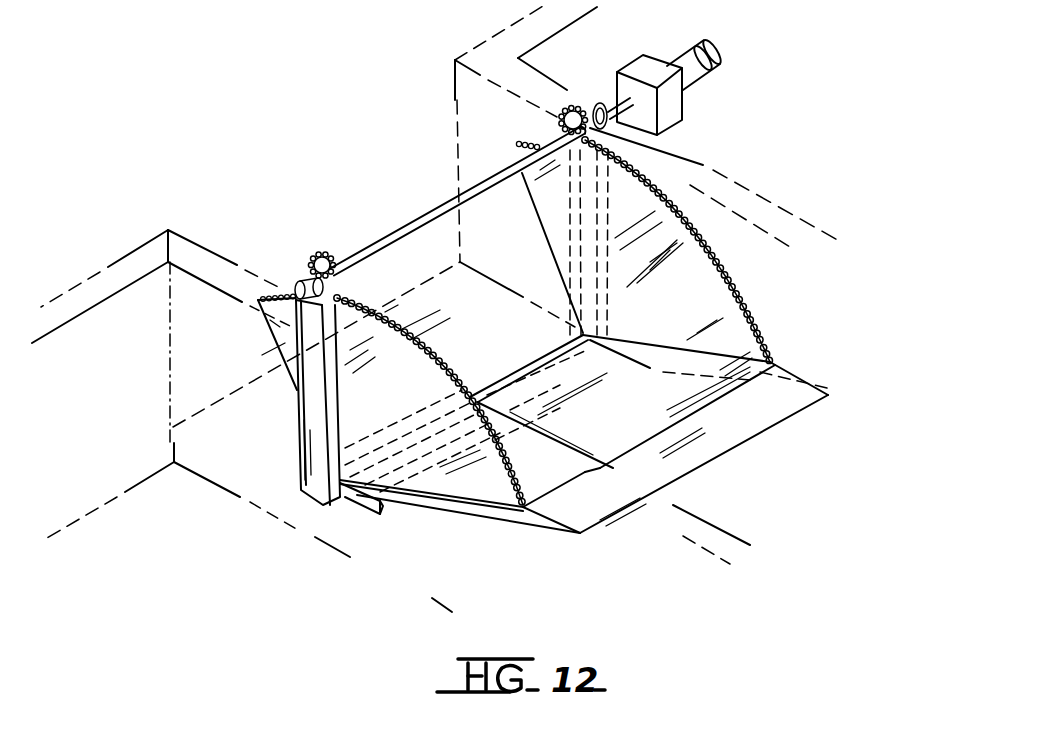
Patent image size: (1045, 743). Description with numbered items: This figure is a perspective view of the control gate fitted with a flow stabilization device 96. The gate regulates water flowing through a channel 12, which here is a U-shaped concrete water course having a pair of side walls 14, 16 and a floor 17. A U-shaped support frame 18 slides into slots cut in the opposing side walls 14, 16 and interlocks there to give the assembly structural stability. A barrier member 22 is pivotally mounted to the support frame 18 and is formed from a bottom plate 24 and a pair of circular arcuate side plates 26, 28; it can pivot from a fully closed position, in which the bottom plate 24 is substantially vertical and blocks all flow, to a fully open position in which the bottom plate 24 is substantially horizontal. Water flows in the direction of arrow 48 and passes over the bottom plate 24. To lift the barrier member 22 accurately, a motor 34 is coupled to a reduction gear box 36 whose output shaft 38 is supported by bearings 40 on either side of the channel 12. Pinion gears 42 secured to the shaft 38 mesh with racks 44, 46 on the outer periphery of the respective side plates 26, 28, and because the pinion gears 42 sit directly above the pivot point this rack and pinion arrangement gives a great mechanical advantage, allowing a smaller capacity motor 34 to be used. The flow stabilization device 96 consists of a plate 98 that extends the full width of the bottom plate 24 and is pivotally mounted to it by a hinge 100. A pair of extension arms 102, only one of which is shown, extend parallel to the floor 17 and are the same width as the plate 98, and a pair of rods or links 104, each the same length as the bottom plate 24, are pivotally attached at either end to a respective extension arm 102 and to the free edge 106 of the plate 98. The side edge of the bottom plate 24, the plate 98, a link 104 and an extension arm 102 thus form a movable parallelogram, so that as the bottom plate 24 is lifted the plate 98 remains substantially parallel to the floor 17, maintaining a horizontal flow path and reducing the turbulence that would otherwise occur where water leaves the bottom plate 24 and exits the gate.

The channel 12 is at (410, 150).
The side wall 14 is at (182, 235).
The side wall 16 is at (535, 85).
The floor 17 is at (740, 514).
The support frame 18 is at (312, 411).
The barrier member 22 is at (780, 333).
The bottom plate 24 is at (630, 428).
The side plate 26 is at (352, 456).
The side plate 28 is at (718, 303).
The motor 34 is at (707, 42).
The reduction gear box 36 is at (652, 62).
The output shaft 38 is at (422, 218).
The bearings 40 is at (580, 105).
The pinion gears 42 is at (333, 256).
The rack 44 is at (720, 240).
The rack 46 is at (447, 328).
The arrow 48 is at (300, 172).
The flow stabilization device 96 is at (740, 469).
The plate 98 is at (777, 417).
The hinge 100 is at (585, 474).
The extension arms 102 is at (373, 516).
The rods or links 104 is at (512, 520).
The free edge 106 is at (625, 505).